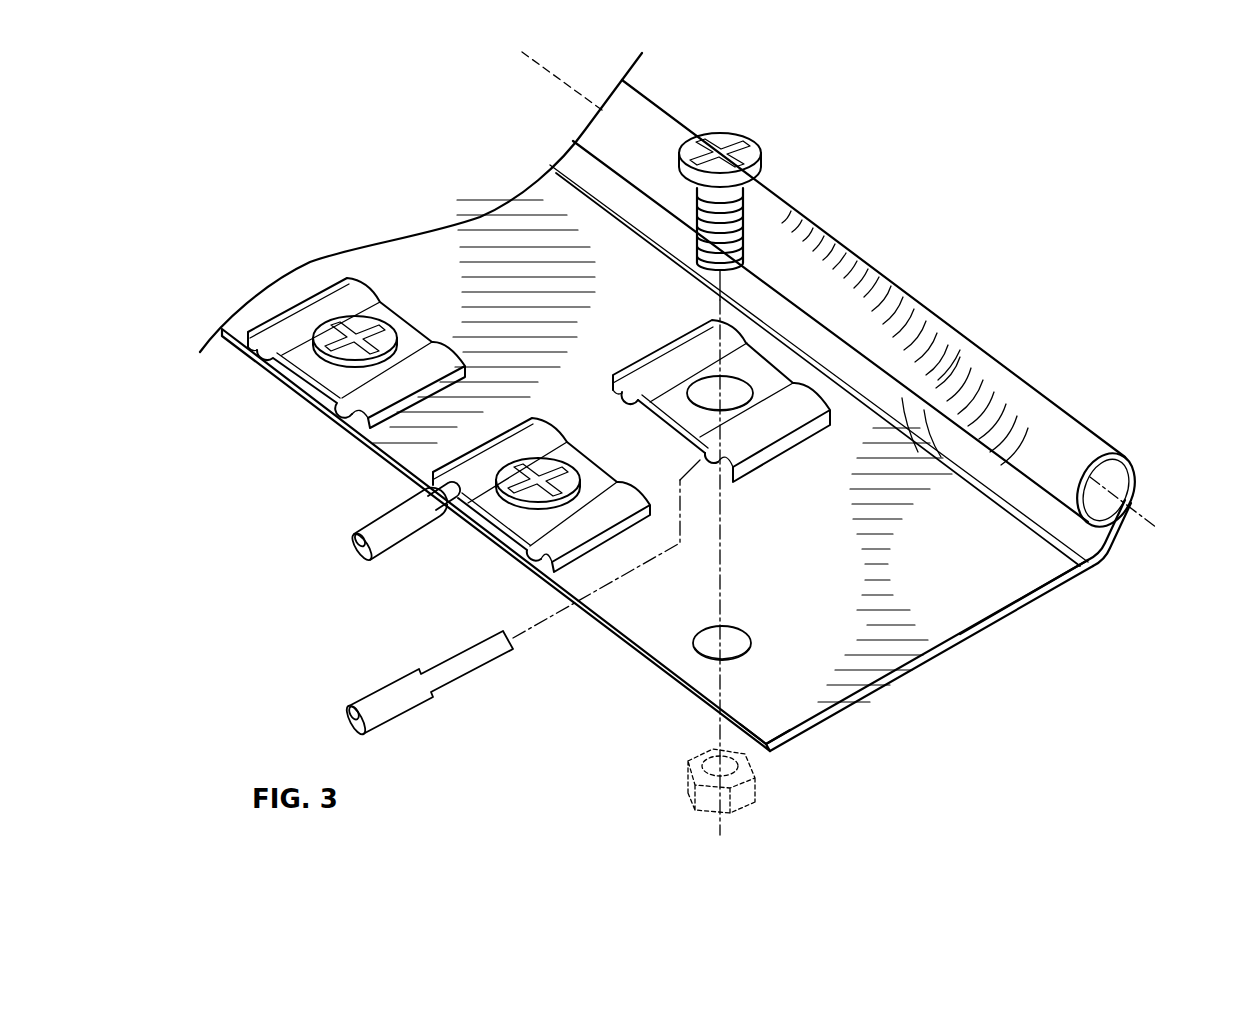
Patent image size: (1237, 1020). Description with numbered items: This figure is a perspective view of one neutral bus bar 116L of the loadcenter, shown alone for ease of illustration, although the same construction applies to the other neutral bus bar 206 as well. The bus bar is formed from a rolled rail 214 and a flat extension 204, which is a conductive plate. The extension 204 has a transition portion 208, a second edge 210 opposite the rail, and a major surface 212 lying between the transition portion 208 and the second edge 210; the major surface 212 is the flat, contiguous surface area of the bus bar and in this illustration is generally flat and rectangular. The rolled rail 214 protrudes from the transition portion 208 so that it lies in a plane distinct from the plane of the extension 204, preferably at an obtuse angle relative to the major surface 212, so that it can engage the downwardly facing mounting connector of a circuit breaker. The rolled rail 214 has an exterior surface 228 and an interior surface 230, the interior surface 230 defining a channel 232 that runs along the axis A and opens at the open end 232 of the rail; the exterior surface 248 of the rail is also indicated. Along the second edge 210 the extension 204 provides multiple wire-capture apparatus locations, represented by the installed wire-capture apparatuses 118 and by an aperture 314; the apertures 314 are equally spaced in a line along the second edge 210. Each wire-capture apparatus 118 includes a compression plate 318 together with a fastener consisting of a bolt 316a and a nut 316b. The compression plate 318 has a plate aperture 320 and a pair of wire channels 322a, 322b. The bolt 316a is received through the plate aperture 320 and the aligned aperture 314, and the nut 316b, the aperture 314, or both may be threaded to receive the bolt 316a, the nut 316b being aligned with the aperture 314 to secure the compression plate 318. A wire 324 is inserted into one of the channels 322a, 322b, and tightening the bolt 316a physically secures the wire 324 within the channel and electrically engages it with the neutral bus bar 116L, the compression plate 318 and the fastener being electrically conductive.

The neutral bus bar 116L is at (418, 248).
The wire-capture apparatus 118 is at (292, 398).
The extension 204 is at (811, 565).
The neutral bus bar 206 is at (987, 677).
The transition portion 208 is at (1060, 598).
The second edge 210 is at (768, 750).
The major surface 212 is at (830, 645).
The rolled rail 214 is at (1104, 538).
The exterior surface 228 is at (1073, 413).
The interior surface 230 is at (1106, 452).
The open end 232 is at (1108, 487).
The outer surface 248 is at (1025, 392).
The aperture 314 is at (695, 627).
The bolt 316a is at (726, 138).
The nut 316b is at (690, 772).
The compression plate 318 is at (692, 320).
The plate aperture 320 is at (703, 384).
The wire channel 322a is at (623, 402).
The wire channel 322b is at (700, 455).
The wire 324 is at (443, 660).
The axis A is at (1152, 535).